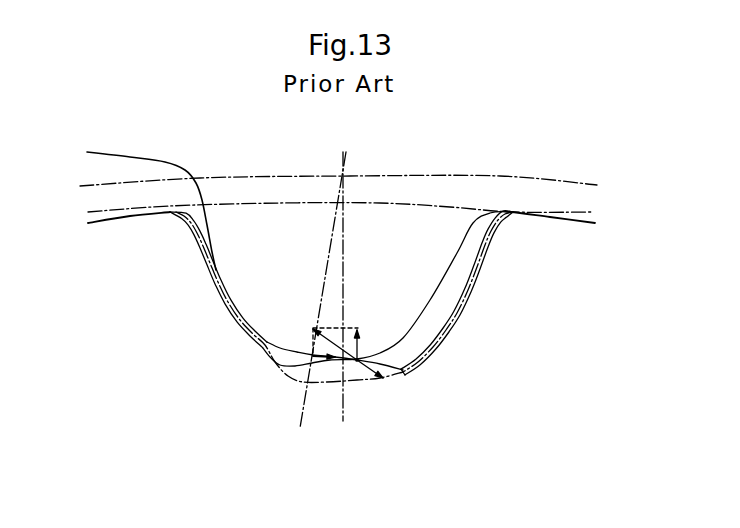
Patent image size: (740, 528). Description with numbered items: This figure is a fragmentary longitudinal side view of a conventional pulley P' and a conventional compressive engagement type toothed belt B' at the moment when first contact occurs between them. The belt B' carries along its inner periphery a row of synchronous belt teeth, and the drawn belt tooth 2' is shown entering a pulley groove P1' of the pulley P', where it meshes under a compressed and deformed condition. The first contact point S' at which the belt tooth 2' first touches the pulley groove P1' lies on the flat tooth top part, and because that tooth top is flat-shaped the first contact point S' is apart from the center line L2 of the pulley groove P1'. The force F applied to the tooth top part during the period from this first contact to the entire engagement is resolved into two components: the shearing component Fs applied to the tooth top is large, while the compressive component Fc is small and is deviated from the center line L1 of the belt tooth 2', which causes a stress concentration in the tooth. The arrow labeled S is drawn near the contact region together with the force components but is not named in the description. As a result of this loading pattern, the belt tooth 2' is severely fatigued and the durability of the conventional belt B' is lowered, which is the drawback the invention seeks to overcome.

The belt B' is at (130, 211).
The pulley P' is at (320, 297).
The belt tooth 2' is at (386, 320).
The force F is at (327, 333).
The compressive component Fc is at (368, 333).
The shearing component Fs is at (303, 358).
The slip direction S is at (376, 386).
The first contact point S' is at (368, 400).
The pulley groove P1' is at (397, 327).
The center line of the belt tooth L1 is at (305, 404).
The center line of the pulley groove L2 is at (343, 420).